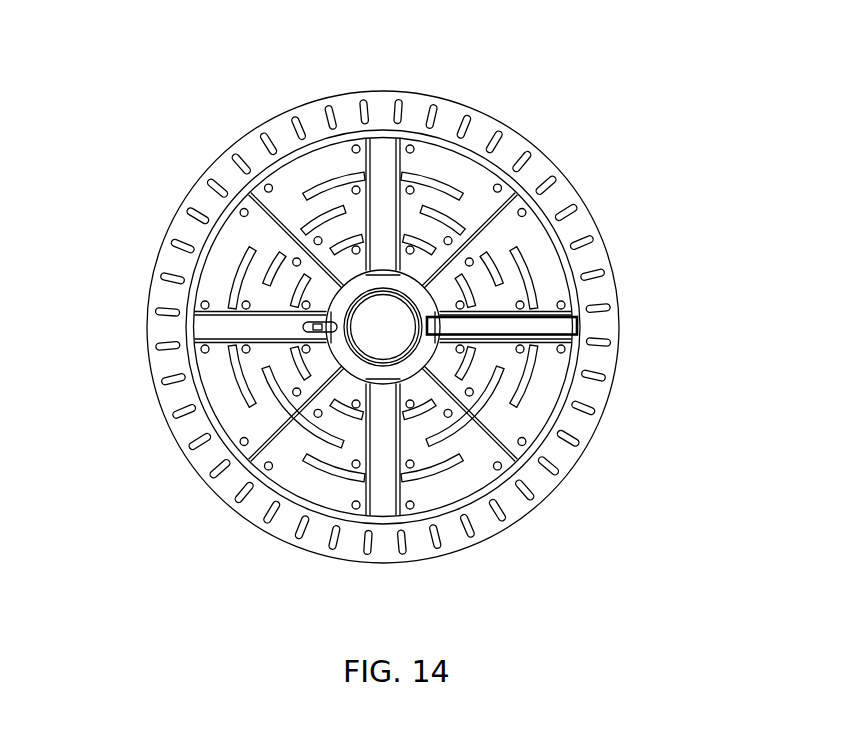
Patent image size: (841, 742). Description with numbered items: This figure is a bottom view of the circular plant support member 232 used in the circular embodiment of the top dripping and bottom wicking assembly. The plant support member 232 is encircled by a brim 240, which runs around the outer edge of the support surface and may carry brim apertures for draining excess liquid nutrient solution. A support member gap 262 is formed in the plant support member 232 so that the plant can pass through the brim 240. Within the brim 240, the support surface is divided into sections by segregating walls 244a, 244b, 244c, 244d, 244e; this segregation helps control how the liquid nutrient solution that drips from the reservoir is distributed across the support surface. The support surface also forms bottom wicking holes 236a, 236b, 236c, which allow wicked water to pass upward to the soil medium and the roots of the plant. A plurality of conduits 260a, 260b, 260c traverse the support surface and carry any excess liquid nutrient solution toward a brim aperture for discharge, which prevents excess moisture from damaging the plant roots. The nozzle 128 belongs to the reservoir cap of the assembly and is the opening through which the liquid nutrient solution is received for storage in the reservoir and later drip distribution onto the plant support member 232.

The nozzle 128 is at (316, 322).
The plant support member 232 is at (647, 327).
The bottom wicking hole 236a is at (265, 466).
The bottom wicking hole 236b is at (505, 464).
The bottom wicking hole 236c is at (527, 212).
The brim 240 is at (148, 333).
The segregating wall 244a is at (257, 197).
The segregating wall 244b is at (250, 395).
The segregating wall 244c is at (450, 465).
The segregating wall 244d is at (525, 393).
The segregating wall 244e is at (488, 198).
The conduit 260a is at (357, 153).
The conduit 260b is at (210, 299).
The conduit 260c is at (349, 497).
The support member gap 262 is at (577, 316).